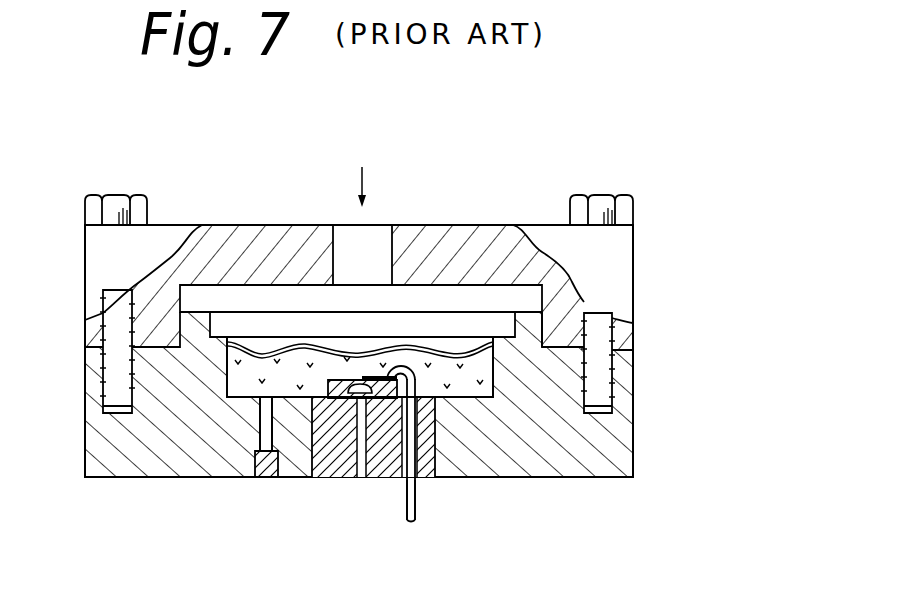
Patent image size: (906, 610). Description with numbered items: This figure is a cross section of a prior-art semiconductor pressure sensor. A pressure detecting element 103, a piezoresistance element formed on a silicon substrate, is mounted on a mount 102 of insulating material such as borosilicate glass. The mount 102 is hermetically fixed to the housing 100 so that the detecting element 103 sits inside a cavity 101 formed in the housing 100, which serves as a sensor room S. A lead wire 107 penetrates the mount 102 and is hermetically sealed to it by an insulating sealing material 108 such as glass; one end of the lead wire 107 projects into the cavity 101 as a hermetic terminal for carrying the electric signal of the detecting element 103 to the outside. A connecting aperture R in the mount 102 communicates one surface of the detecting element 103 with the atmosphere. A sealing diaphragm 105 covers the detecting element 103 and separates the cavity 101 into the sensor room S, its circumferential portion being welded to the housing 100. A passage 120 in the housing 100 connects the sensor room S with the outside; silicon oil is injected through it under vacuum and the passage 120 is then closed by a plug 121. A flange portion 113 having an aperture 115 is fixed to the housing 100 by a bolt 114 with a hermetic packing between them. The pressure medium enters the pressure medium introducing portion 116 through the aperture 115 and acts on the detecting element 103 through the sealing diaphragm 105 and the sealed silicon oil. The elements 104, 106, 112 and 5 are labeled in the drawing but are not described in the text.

The housing 100 is at (138, 478).
The cavity 101 is at (215, 380).
The mount 102 is at (317, 478).
The pressure detecting element 103 is at (338, 378).
The upper housing / cover 104 is at (515, 226).
The sealing diaphragm 105 is at (292, 347).
The sensor chip 106 is at (385, 377).
The lead wire 107 is at (411, 521).
The insulating sealing material 108 is at (417, 476).
The housing wall portion 112 is at (543, 360).
The flange portion 113 is at (155, 224).
The bolt 114 is at (598, 414).
The aperture 115 is at (346, 226).
The pressure medium introducing portion 116 is at (378, 297).
The passage 120 is at (262, 440).
The plug 121 is at (228, 342).
The sensing element 5 is at (368, 383).
The connecting aperture R is at (358, 478).
The sensor room S is at (457, 387).